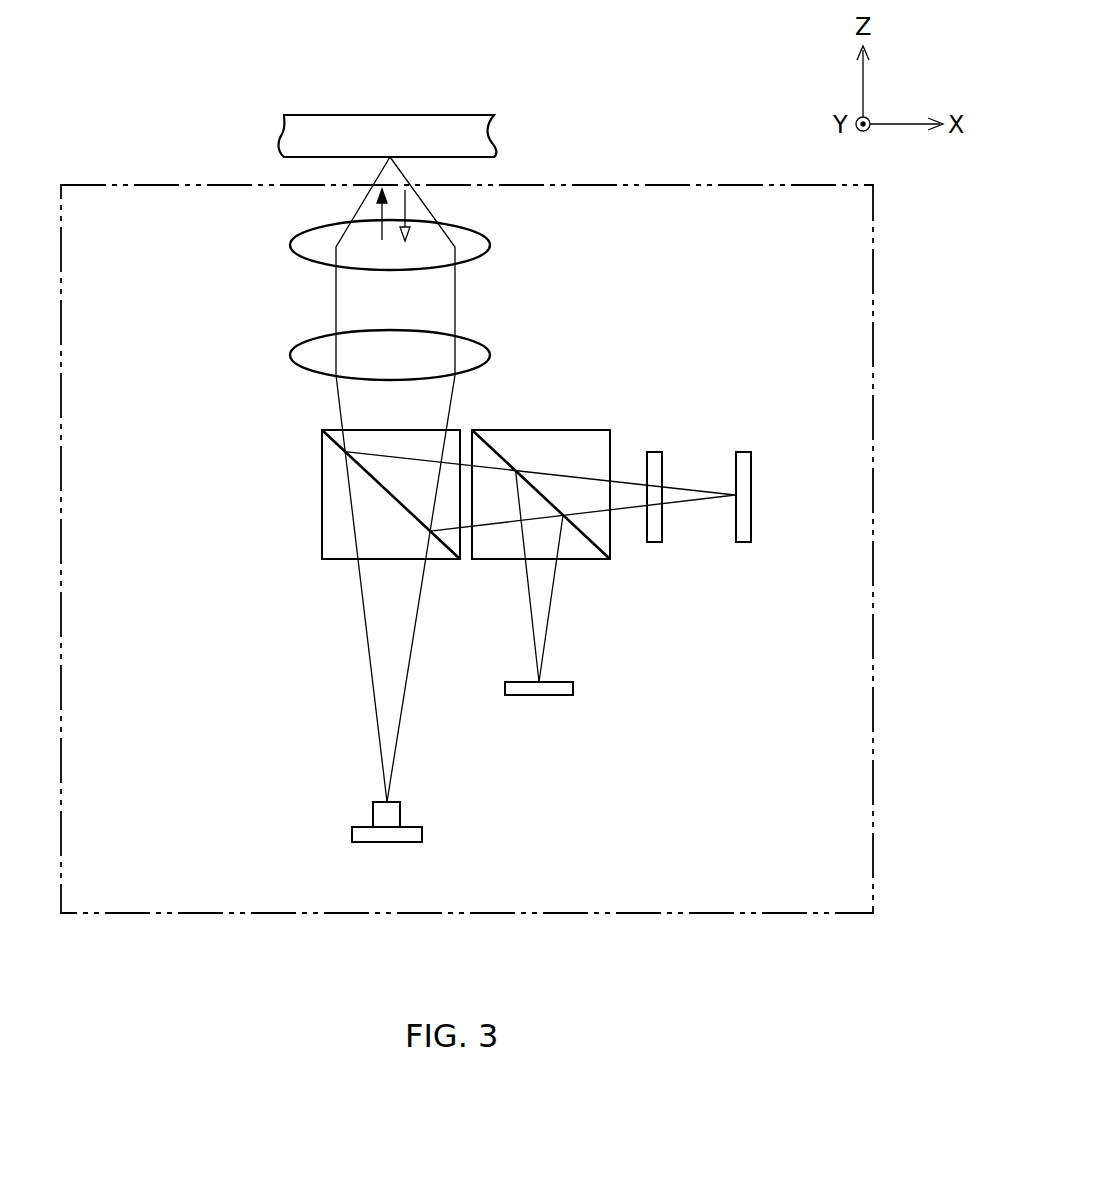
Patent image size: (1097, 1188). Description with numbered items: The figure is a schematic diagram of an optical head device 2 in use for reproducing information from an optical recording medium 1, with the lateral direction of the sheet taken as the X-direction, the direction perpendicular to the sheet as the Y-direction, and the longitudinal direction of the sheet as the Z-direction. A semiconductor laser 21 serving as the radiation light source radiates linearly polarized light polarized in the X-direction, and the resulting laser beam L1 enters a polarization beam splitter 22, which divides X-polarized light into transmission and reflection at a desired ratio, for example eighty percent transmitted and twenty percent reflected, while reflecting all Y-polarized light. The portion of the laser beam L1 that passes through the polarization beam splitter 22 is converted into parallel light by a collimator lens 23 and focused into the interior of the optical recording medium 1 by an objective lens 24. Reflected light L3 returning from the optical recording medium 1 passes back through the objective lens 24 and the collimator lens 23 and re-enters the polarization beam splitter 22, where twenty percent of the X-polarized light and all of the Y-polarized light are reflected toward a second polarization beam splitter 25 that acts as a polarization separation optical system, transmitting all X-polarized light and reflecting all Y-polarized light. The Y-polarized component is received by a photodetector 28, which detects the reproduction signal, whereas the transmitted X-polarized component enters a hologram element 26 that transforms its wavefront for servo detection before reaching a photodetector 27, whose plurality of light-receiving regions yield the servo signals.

The optical recording medium 1 is at (441, 128).
The optical head device 2 is at (678, 185).
The semiconductor laser 21 is at (400, 813).
The polarization beam splitter 22 is at (322, 466).
The collimator lens 23 is at (480, 342).
The objective lens 24 is at (490, 248).
The polarization beam splitter 25 is at (575, 440).
The hologram element 26 is at (656, 545).
The photodetector 27 is at (745, 455).
The photodetector 28 is at (573, 688).
The laser beam L1 is at (380, 211).
The reflected light L3 is at (407, 205).